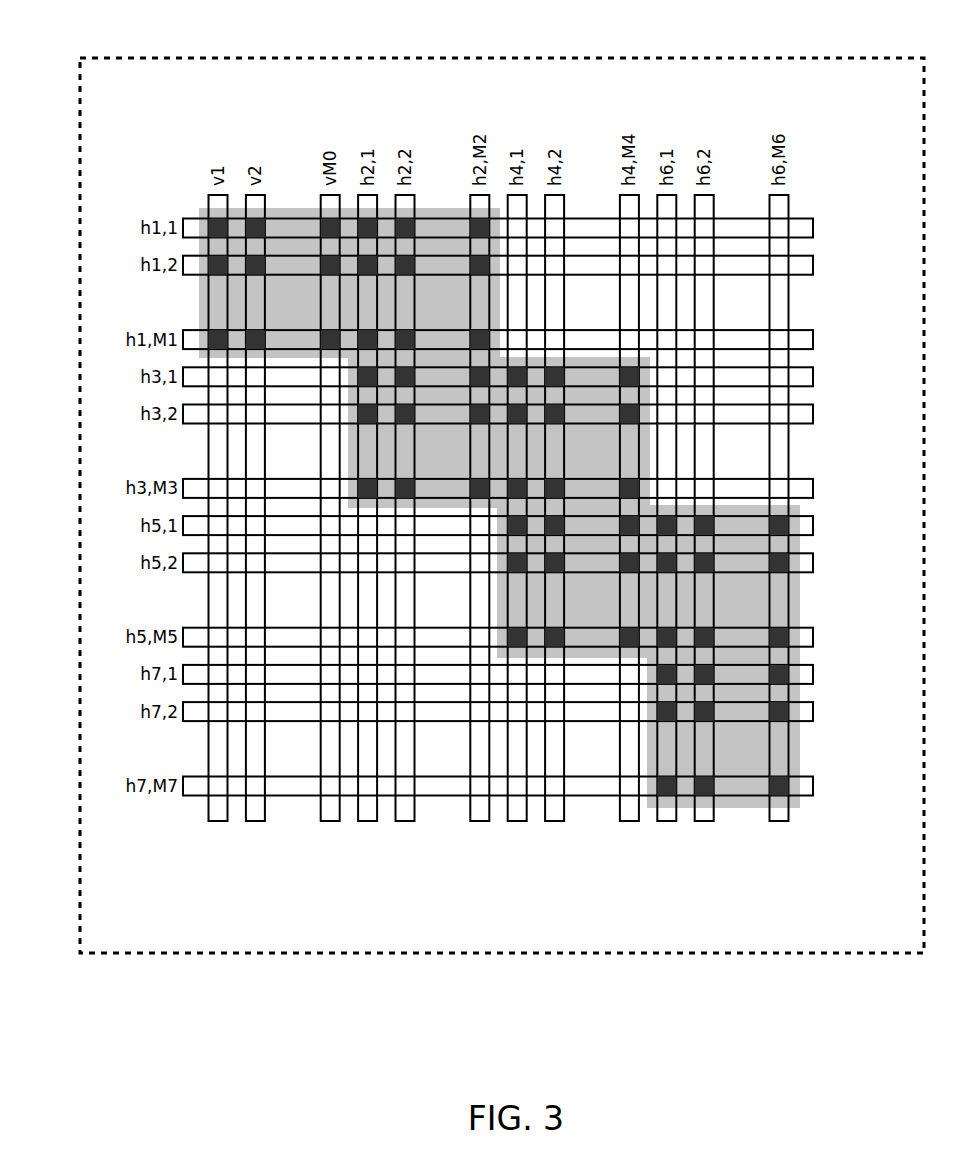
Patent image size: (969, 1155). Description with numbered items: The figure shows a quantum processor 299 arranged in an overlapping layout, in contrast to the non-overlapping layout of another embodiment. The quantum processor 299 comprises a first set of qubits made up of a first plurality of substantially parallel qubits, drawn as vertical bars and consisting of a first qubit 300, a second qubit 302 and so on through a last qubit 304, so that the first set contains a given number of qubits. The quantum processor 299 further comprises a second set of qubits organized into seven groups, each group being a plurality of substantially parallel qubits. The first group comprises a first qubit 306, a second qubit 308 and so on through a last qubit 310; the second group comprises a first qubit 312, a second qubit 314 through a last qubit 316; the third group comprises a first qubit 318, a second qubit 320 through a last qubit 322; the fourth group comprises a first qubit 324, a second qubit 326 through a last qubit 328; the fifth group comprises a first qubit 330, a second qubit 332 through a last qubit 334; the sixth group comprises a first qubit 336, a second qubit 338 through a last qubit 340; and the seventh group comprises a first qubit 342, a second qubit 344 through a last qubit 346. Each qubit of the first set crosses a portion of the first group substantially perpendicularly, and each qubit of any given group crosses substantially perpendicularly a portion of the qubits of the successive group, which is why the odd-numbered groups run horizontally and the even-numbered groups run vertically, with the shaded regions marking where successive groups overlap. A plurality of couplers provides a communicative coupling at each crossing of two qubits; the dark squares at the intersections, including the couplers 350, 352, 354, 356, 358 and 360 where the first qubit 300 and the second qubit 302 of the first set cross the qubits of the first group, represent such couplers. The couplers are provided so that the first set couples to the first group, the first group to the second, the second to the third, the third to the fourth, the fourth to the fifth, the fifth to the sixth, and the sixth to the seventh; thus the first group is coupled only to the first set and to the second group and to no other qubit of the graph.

The quantum processor 299 is at (768, 58).
The qubit V1 300 is at (219, 821).
The qubit V2 302 is at (256, 821).
The qubit VM0 304 is at (330, 821).
The qubit H1,1 306 is at (813, 231).
The qubit H1,2 308 is at (813, 268).
The qubit H1,M1 310 is at (813, 343).
The qubit H2,1 312 is at (368, 194).
The qubit H2,2 314 is at (407, 194).
The qubit H2,M2 316 is at (485, 194).
The qubit H3,1 318 is at (813, 380).
The qubit H3,2 320 is at (813, 417).
The qubit H3,M3 322 is at (813, 491).
The qubit H4,1 324 is at (515, 821).
The qubit H4,2 326 is at (553, 821).
The qubit H4,M4 328 is at (627, 821).
The qubit H5,1 330 is at (813, 528).
The qubit H5,2 332 is at (813, 565).
The qubit H5,M5 334 is at (813, 640).
The qubit H6,1 336 is at (667, 821).
The qubit H6,2 338 is at (705, 821).
The qubit H6,M6 340 is at (777, 821).
The qubit H7,1 342 is at (813, 677).
The qubit H7,2 344 is at (813, 714).
The qubit H7,M7 346 is at (813, 789).
The switch at v1 and h1,1 350 is at (220, 229).
The switch at v1 and h1,2 352 is at (217, 266).
The switch at v1 and h1,M1 354 is at (219, 343).
The switch at v2 and h1,1 356 is at (254, 229).
The switch at v2 and h1,2 358 is at (254, 266).
The switch at v2 and h1,M1 360 is at (258, 343).